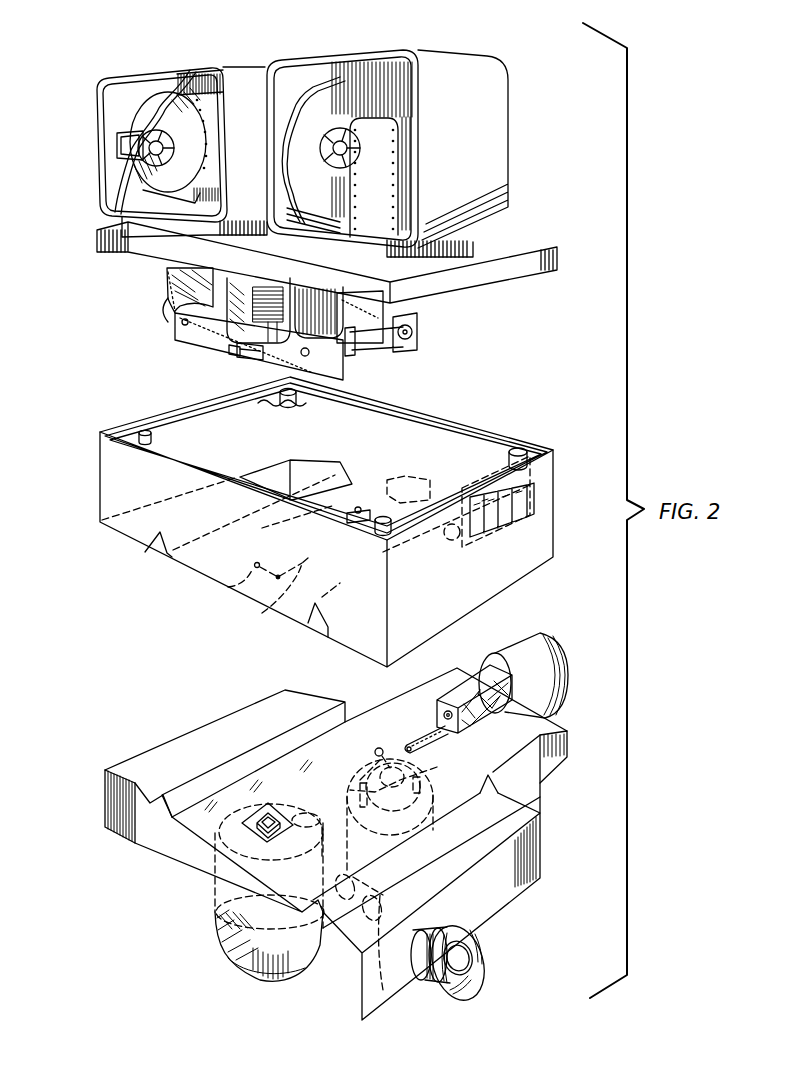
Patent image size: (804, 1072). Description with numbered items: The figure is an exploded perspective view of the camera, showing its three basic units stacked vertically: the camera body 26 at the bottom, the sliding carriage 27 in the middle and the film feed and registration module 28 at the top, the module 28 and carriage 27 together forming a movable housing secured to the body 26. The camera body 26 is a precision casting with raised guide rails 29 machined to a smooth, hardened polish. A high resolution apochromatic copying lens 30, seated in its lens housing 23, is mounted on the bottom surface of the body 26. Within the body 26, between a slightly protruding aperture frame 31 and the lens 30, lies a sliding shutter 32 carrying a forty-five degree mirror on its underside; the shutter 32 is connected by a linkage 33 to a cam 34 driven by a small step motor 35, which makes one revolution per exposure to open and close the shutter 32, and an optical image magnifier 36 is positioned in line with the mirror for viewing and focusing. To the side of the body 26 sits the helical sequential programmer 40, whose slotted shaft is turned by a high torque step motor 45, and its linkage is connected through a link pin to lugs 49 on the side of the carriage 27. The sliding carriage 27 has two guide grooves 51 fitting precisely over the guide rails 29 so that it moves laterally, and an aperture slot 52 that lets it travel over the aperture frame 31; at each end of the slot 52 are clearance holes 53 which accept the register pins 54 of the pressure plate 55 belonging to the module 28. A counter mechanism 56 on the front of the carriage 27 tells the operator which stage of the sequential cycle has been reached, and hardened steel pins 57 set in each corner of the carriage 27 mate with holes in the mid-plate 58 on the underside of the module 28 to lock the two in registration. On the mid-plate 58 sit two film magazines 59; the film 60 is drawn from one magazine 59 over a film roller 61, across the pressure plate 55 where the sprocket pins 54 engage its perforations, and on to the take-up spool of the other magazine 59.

The lens housing 23 is at (220, 932).
The camera body 26 is at (146, 730).
The sliding carriage 27 is at (78, 473).
The film feed and registration module 28 is at (128, 267).
The guide rails 29 is at (260, 755).
The copying lens 30 is at (243, 972).
The aperture frame 31 is at (242, 823).
The sliding shutter 32 is at (213, 857).
The linkage 33 is at (320, 793).
The cam 34 is at (390, 753).
The step motor 35 is at (437, 767).
The optical image magnifier 36 is at (383, 987).
The helical sequential programmer 40 is at (446, 658).
The high torque step motor 45 is at (543, 662).
The lugs 49 is at (423, 480).
The guide grooves 51 is at (157, 548).
The aperture slot 52 is at (262, 613).
The clearance holes 53 is at (228, 587).
The register pins 54 is at (257, 355).
The pressure plate 55 is at (233, 351).
The counter mechanism 56 is at (528, 524).
The steel pins 57 is at (523, 457).
The mid-plate 58 is at (523, 247).
The film magazines 59 is at (318, 65).
The film 60 is at (205, 98).
The film roller 61 is at (170, 323).